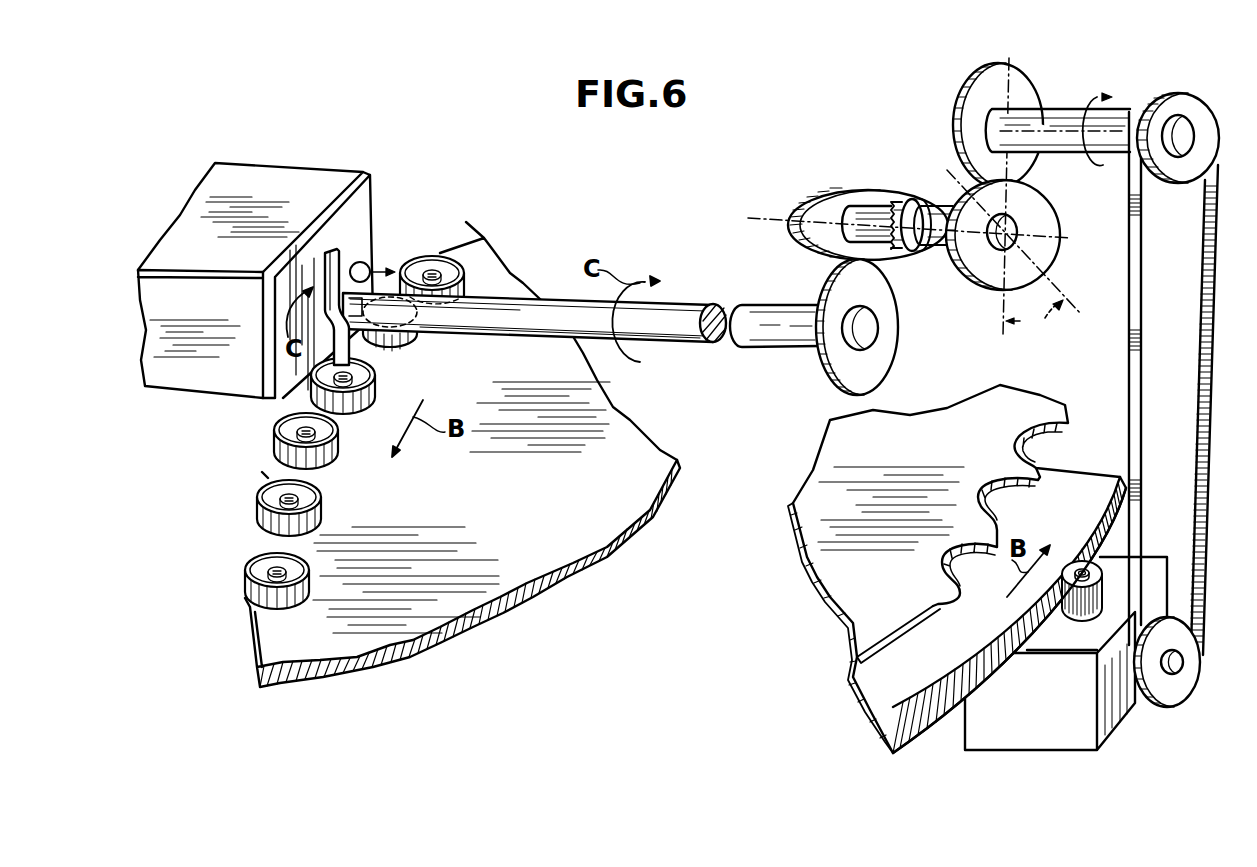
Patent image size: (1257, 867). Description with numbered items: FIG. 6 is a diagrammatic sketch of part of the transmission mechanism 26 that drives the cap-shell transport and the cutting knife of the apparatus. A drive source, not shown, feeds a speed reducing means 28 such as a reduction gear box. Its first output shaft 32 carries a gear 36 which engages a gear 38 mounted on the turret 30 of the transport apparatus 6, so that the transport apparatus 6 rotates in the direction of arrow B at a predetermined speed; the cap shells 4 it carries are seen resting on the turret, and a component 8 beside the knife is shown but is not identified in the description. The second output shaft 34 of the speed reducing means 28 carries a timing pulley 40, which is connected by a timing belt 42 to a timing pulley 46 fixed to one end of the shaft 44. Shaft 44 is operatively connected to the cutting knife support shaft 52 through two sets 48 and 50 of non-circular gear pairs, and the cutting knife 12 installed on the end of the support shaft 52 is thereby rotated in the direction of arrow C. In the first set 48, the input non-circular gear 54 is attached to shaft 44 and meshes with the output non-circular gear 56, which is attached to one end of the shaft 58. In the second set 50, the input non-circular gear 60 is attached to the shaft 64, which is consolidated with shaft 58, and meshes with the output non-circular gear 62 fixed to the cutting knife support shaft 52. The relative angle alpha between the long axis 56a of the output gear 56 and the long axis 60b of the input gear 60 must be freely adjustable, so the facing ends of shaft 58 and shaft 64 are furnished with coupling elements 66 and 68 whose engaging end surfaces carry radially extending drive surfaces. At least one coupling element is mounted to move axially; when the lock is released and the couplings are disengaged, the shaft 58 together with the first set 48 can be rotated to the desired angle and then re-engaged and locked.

The containers 4 is at (439, 258).
The transport apparatus 6 is at (685, 490).
The housing 8 is at (312, 171).
The cutting knife 12 is at (342, 260).
The transmission mechanism 26 is at (1120, 377).
The speed reducing means 28 is at (1118, 728).
The turret 30 is at (888, 598).
The first output shaft 32 is at (1078, 568).
The second output shaft 34 is at (1176, 670).
The gear 36 is at (1075, 602).
The gear 38 is at (893, 748).
The timing pulley 40 is at (1193, 673).
The timing belt 42 is at (1210, 448).
The shaft 44 is at (1063, 110).
The timing pulley 46 is at (1195, 113).
The first set of non-circular gear pairs 48 is at (935, 178).
The second set of non-circular gear pairs 50 is at (839, 238).
The cutting knife support shaft 52 is at (707, 340).
The input non-circular gear 54 is at (996, 72).
The output non-circular gear 56 is at (985, 258).
The long axis 56a is at (1040, 258).
The shaft 58 is at (945, 250).
The input non-circular gear 60 is at (851, 202).
The long axis 60b is at (848, 191).
The output non-circular gear 62 is at (878, 360).
The shaft 64 is at (872, 206).
The coupling element 66 is at (915, 199).
The coupling element 68 is at (897, 202).